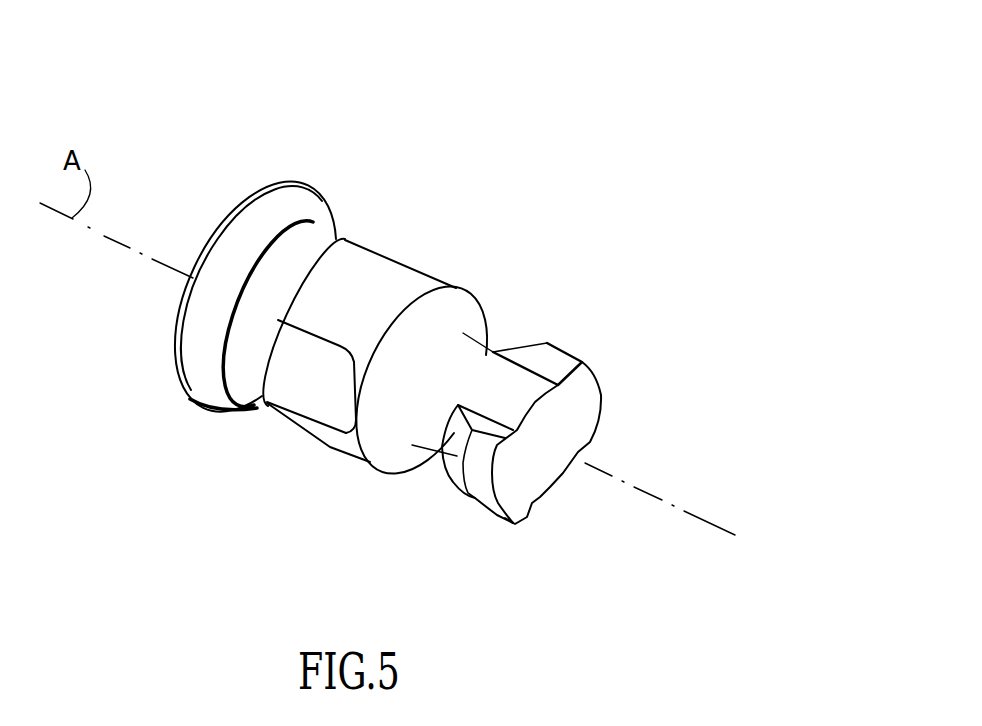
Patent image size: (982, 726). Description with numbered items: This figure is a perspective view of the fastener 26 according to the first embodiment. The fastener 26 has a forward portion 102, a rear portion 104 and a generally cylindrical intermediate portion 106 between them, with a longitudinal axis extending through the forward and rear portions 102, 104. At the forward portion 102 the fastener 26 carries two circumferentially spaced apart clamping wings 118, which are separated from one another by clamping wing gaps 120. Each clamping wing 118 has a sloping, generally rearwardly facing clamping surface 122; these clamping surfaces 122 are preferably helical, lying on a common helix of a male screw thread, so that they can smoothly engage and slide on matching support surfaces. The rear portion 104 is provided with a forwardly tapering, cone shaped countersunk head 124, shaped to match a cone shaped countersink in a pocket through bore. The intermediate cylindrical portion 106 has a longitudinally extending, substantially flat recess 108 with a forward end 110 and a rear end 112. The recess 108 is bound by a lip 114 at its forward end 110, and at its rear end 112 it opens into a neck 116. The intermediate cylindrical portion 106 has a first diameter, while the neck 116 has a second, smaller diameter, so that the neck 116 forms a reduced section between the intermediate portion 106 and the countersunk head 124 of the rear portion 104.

The fastener 26 is at (653, 173).
The forward portion 102 is at (645, 300).
The rear portion 104 is at (395, 128).
The intermediate portion 106 is at (480, 202).
The recess 108 is at (300, 397).
The forward end 110 is at (337, 400).
The rear end 112 is at (266, 358).
The lip 114 is at (357, 425).
The neck 116 is at (242, 348).
The clamping wings 118 is at (606, 396).
The clamping wing gaps 120 is at (507, 391).
The clamping surface 122 is at (447, 460).
The countersunk head 124 is at (297, 209).